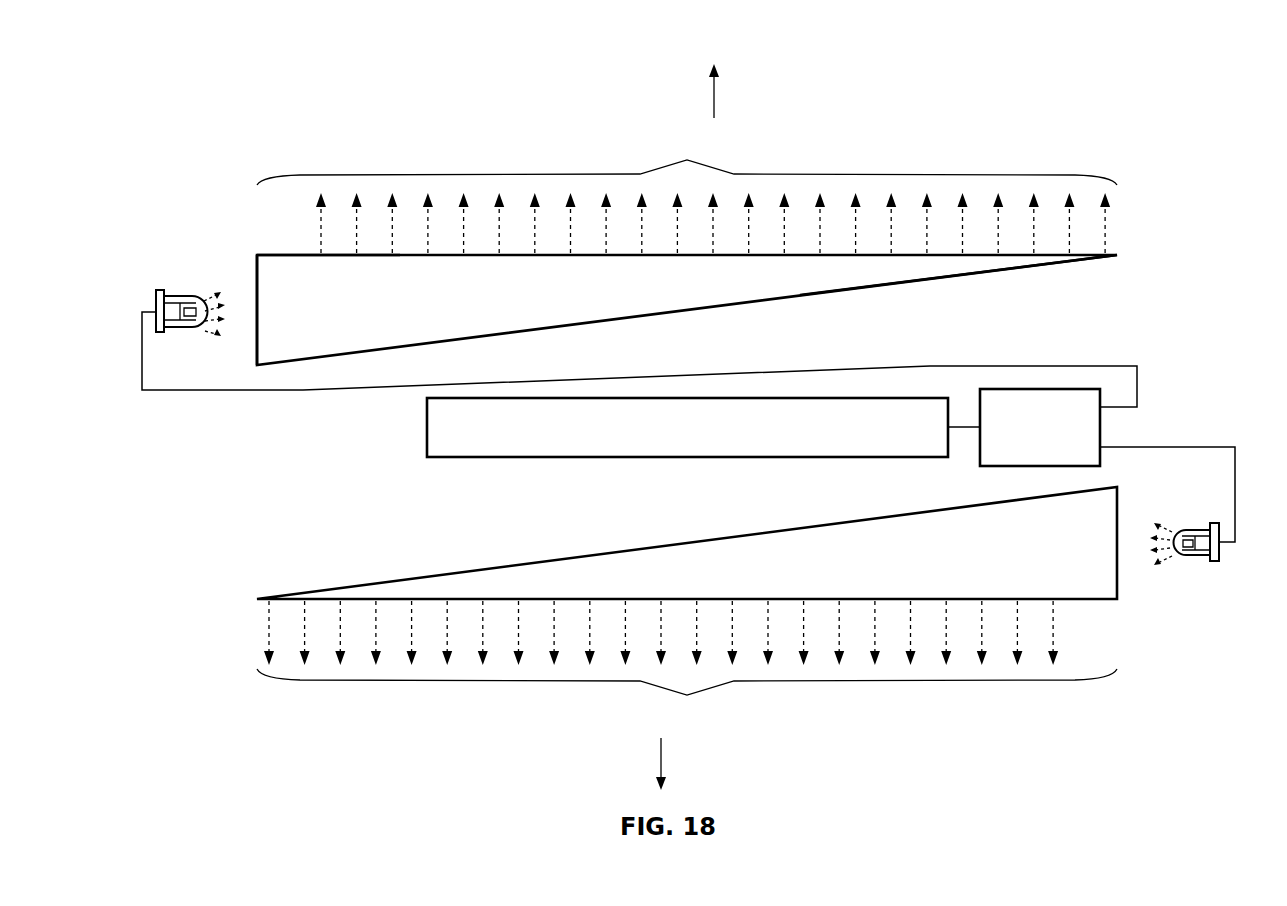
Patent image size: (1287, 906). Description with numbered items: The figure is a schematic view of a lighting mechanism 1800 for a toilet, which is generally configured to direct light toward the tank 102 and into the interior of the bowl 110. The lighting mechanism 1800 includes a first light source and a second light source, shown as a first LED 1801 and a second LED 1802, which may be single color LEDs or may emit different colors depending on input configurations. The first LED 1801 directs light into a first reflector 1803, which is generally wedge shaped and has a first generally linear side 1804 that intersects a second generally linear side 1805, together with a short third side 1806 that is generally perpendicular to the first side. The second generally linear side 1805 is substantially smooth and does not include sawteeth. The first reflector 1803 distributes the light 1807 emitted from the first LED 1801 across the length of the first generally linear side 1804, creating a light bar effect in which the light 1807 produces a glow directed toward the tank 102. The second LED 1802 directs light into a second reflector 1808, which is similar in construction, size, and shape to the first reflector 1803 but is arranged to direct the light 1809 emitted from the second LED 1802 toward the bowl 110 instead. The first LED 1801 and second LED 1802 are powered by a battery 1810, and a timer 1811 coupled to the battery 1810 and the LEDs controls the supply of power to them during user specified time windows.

The lighting mechanism 1800 is at (152, 90).
The tank 102 is at (714, 92).
The bowl 110 is at (661, 770).
The first LED 1801 is at (186, 327).
The second LED 1802 is at (1195, 533).
The first reflector 1803 is at (687, 310).
The first generally linear side 1804 is at (257, 252).
The second generally linear side 1805 is at (1010, 270).
The short third side 1806 is at (257, 266).
The light 1807 is at (183, 277).
The second reflector 1808 is at (687, 543).
The light 1809 is at (1198, 577).
The battery 1810 is at (703, 427).
The timer 1811 is at (1107, 465).